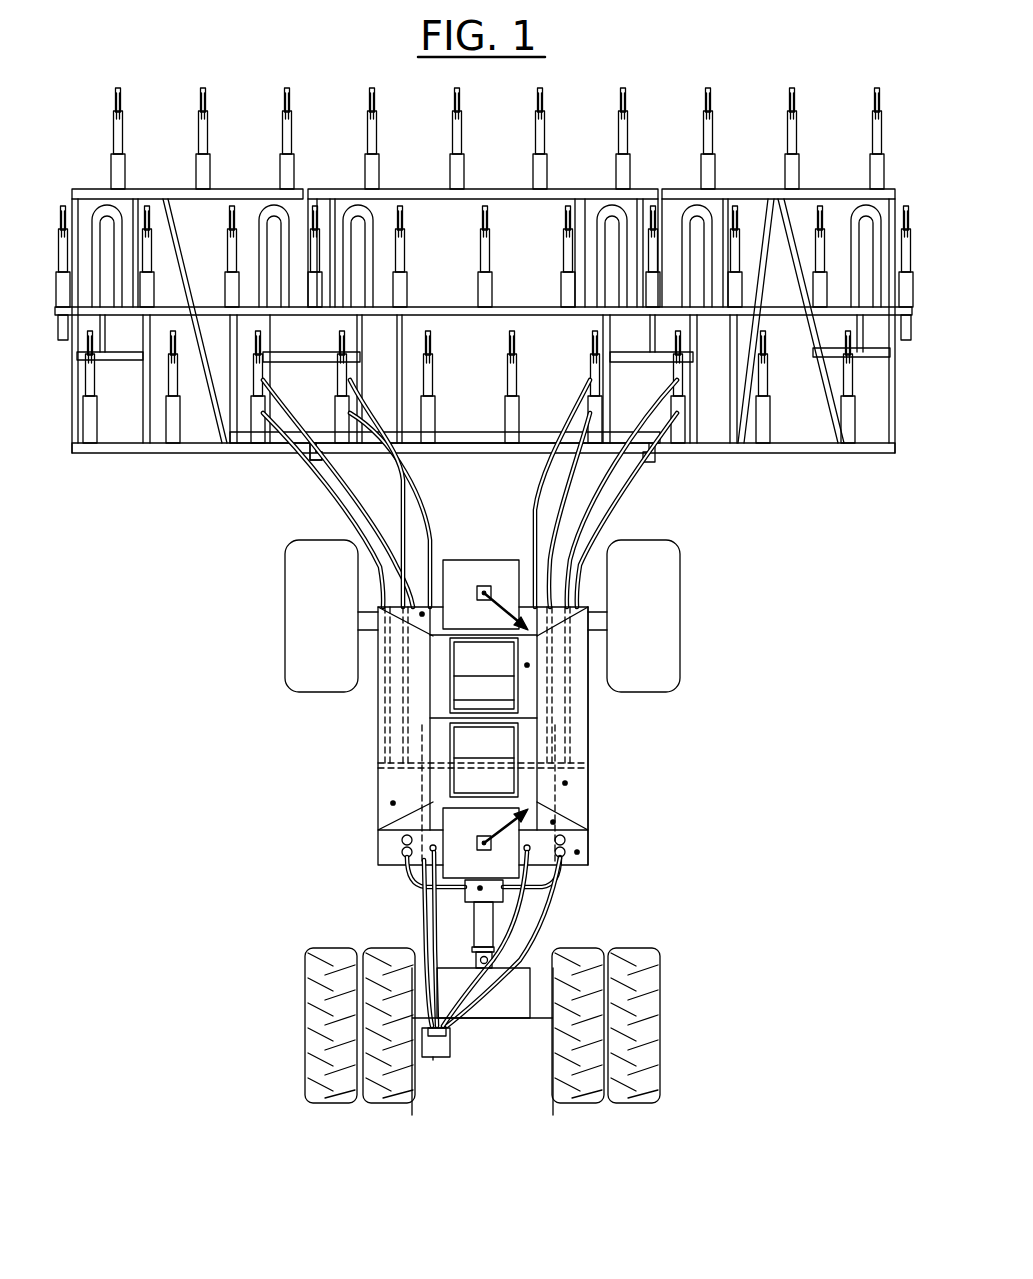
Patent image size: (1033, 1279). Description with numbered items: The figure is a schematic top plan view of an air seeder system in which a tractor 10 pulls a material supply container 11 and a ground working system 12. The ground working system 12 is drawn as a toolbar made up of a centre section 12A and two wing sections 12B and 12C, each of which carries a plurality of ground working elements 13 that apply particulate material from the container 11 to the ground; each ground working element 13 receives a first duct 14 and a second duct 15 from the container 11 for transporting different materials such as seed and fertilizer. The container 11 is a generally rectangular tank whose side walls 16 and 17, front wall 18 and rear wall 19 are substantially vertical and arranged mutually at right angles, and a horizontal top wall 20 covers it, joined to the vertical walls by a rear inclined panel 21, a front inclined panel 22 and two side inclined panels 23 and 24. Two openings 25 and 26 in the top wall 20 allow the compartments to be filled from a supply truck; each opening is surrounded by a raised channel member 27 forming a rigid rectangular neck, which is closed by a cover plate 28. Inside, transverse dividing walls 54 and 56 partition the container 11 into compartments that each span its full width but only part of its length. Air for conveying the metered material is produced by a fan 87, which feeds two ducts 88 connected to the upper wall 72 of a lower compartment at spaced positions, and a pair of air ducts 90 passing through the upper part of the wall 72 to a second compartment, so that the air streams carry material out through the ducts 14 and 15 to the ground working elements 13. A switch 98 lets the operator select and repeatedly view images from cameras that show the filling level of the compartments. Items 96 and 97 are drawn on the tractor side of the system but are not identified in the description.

The tractor 10 is at (664, 949).
The material supply container 11 is at (597, 737).
The ground working system 12 is at (676, 181).
The centre section 12A is at (432, 190).
The wing section 12B is at (175, 292).
The wing section 12C is at (853, 188).
The ground working element 13 is at (98, 425).
The first duct 14 is at (310, 452).
The second duct 15 is at (328, 428).
The side wall 16 is at (378, 793).
The side wall 17 is at (587, 782).
The front wall 18 is at (577, 852).
The rear wall 19 is at (432, 600).
The top wall 20 is at (527, 665).
The rear inclined panel 21 is at (422, 614).
The front inclined panel 22 is at (553, 822).
The side inclined panel 23 is at (565, 783).
The side inclined panel 24 is at (393, 803).
The opening 25 is at (475, 708).
The opening 26 is at (450, 747).
The raised channel member 27 is at (460, 720).
The cover plate 28 is at (479, 587).
The dividing wall 54 is at (495, 672).
The dividing wall 56 is at (495, 757).
The upper wall 72 is at (565, 830).
The fan 87 is at (480, 888).
The duct 88 is at (405, 870).
The air duct 90 is at (398, 850).
The connector 96 is at (435, 848).
The control unit 97 is at (450, 1040).
The switch 98 is at (433, 1058).